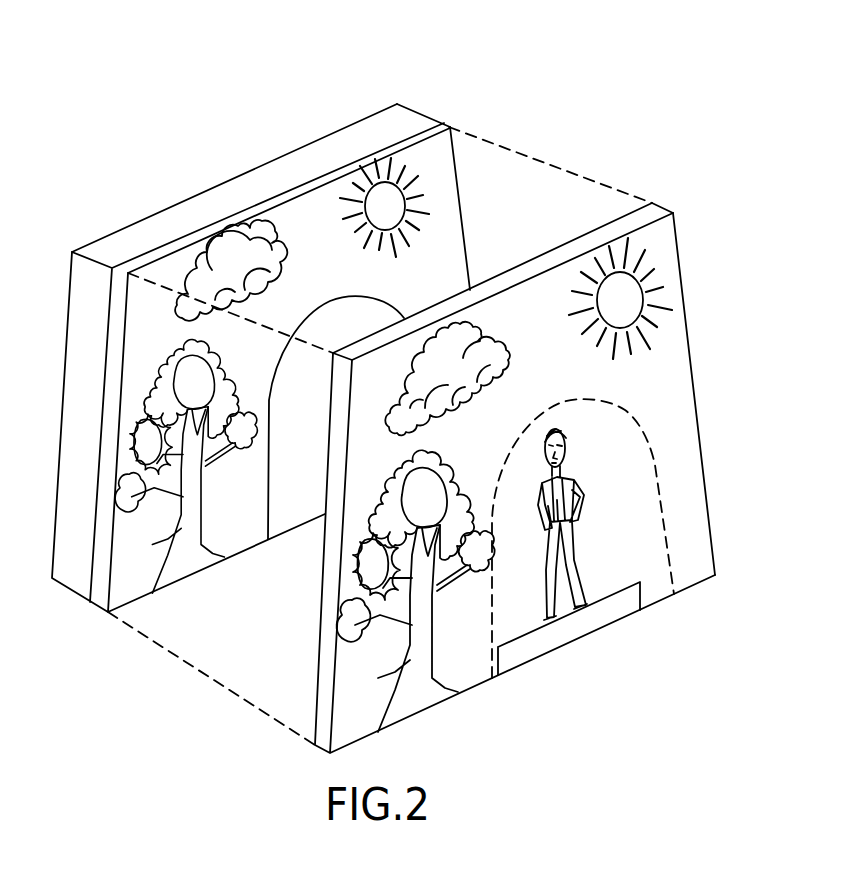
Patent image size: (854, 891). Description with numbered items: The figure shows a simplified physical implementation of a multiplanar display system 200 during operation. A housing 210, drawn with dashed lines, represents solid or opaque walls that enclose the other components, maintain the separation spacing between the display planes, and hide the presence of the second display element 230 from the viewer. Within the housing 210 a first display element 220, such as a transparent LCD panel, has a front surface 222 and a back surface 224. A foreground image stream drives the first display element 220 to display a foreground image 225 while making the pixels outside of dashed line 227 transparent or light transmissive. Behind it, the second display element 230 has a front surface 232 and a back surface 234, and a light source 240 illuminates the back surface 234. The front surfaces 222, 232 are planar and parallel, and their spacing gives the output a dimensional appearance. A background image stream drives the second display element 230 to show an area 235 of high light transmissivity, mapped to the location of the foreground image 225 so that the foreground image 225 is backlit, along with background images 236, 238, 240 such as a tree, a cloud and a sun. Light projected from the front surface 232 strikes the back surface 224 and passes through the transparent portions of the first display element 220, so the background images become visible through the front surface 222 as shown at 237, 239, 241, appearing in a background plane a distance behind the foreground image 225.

The multiplanar display system 200 is at (608, 107).
The housing 210 is at (483, 138).
The first display element 220 is at (670, 212).
The front surface 222 is at (673, 245).
The back surface 224 is at (627, 213).
The foreground image 225 is at (580, 557).
The dashed line 227 is at (657, 460).
The second display element 230 is at (442, 122).
The front surface 232 is at (462, 205).
The back surface 234 is at (388, 132).
The area 235 is at (311, 490).
The background image 236 is at (173, 538).
The background image as visible via front surface 237 is at (407, 667).
The background image 238 is at (285, 262).
The background image as visible via front surface 239 is at (509, 353).
The light source 240 is at (147, 218).
The background image as visible via front surface 241 is at (635, 330).